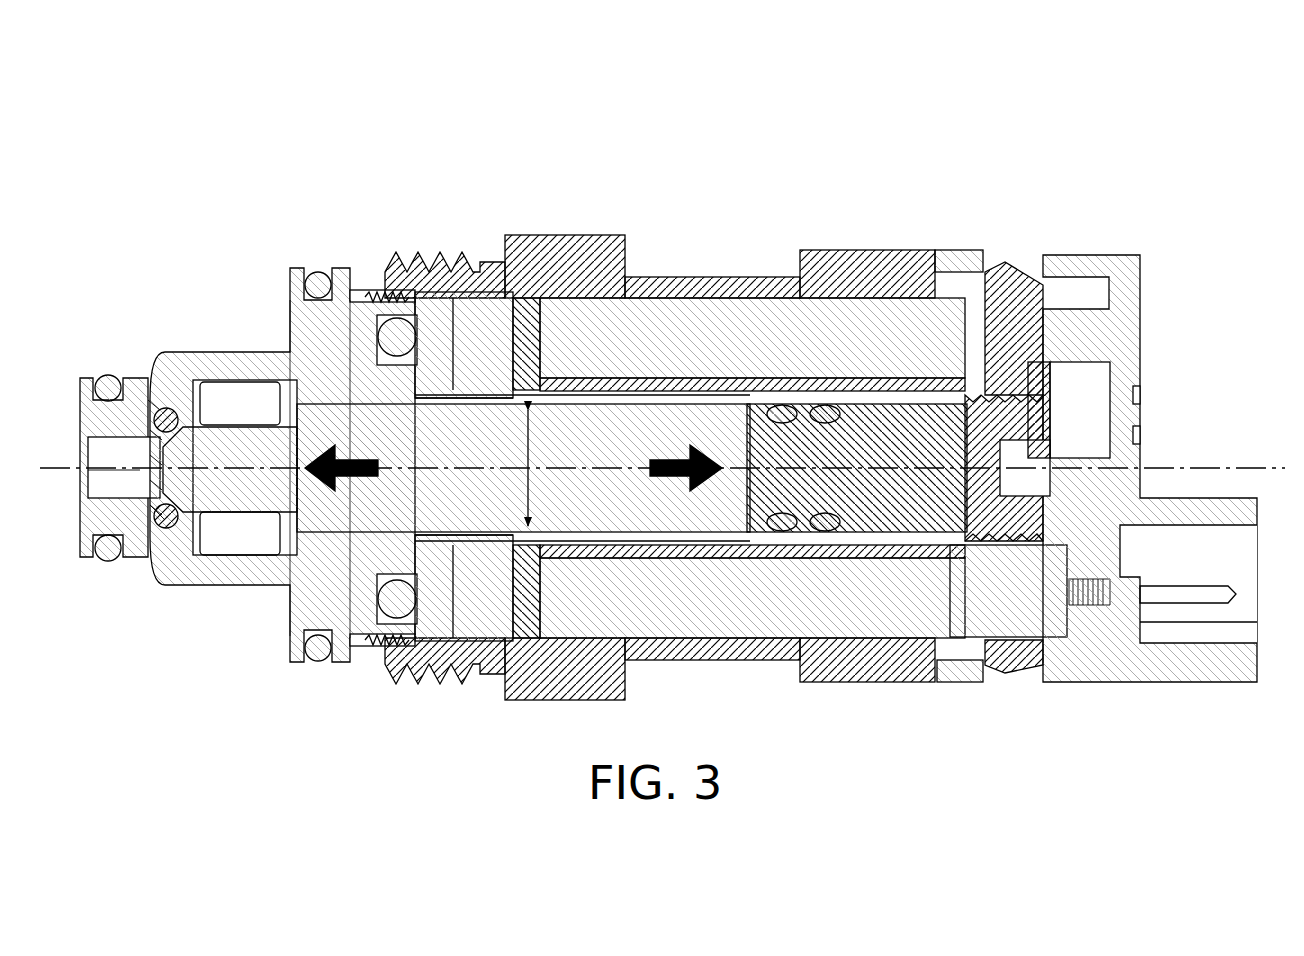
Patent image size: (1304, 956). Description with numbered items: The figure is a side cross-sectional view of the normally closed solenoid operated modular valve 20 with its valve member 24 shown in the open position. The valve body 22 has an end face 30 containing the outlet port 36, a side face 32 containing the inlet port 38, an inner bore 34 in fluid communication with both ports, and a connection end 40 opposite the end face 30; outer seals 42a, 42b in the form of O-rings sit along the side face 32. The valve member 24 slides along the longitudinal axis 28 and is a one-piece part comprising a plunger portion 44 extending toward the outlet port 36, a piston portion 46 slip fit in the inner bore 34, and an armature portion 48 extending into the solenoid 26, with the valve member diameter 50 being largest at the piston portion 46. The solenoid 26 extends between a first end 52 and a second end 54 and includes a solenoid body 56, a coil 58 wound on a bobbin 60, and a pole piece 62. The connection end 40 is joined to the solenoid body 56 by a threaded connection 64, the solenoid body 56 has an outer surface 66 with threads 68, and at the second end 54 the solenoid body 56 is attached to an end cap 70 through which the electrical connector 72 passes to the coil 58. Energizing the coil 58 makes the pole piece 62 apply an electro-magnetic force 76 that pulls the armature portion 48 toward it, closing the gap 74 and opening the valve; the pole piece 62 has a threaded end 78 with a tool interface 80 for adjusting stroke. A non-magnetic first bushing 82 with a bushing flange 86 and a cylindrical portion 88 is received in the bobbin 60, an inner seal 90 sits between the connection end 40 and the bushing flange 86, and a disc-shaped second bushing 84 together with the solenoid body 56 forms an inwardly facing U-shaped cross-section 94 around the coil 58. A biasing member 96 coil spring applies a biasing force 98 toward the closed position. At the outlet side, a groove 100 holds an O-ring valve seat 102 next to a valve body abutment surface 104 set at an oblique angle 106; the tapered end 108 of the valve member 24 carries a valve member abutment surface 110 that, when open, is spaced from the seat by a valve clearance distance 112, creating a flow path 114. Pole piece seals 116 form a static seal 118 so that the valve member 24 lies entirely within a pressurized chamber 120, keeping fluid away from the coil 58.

The normally closed solenoid operated modular valve 20 is at (240, 150).
The valve body 22 is at (185, 575).
The valve member 24 is at (272, 580).
The solenoid 26 is at (868, 175).
The longitudinal axis 28 is at (1222, 468).
The end face 30 is at (78, 410).
The side face 32 is at (175, 345).
The inner bore 34 is at (355, 640).
The outlet port 36 is at (120, 448).
The inlet port 38 is at (245, 400).
The connection end 40 is at (355, 355).
The outer seal 42a is at (108, 556).
The outer seal 42b is at (318, 662).
The plunger portion 44 is at (250, 520).
The piston portion 46 is at (340, 400).
The armature portion 48 is at (630, 560).
The valve member diameter 50 is at (560, 692).
The first end 52 is at (418, 205).
The second end 54 is at (1035, 222).
The solenoid body 56 is at (890, 662).
The coil 58 is at (690, 300).
The bobbin 60 is at (690, 652).
The pole piece 62 is at (960, 582).
The threaded connection 64 is at (410, 672).
The outer surface 66 is at (755, 662).
The threads 68 is at (440, 262).
The end cap 70 is at (1100, 350).
The electrical connector 72 is at (1215, 590).
The gap 74 is at (740, 370).
The electro-magnetic force 76 is at (675, 340).
The threaded end 78 is at (1035, 415).
The tool interface 80 is at (1030, 458).
The first bushing 82 is at (570, 290).
The second bushing 84 is at (485, 340).
The bushing flange 86 is at (450, 662).
The cylindrical portion 88 is at (665, 555).
The inner seal 90 is at (395, 318).
The inwardly facing U-shaped cross-section 94 is at (800, 592).
The biasing member 96 is at (310, 360).
The biasing force 98 is at (260, 385).
The groove 100 is at (150, 505).
The O-ring valve seat 102 is at (162, 410).
The valve body abutment surface 104 is at (175, 528).
The oblique angle 106 is at (195, 545).
The tapered end 108 is at (195, 378).
The valve member abutment surface 110 is at (124, 353).
The valve clearance distance 112 is at (172, 360).
The flow path 114 is at (145, 470).
The pole piece seals 116 is at (825, 404).
The static seal 118 is at (825, 562).
The pressurized chamber 120 is at (350, 310).